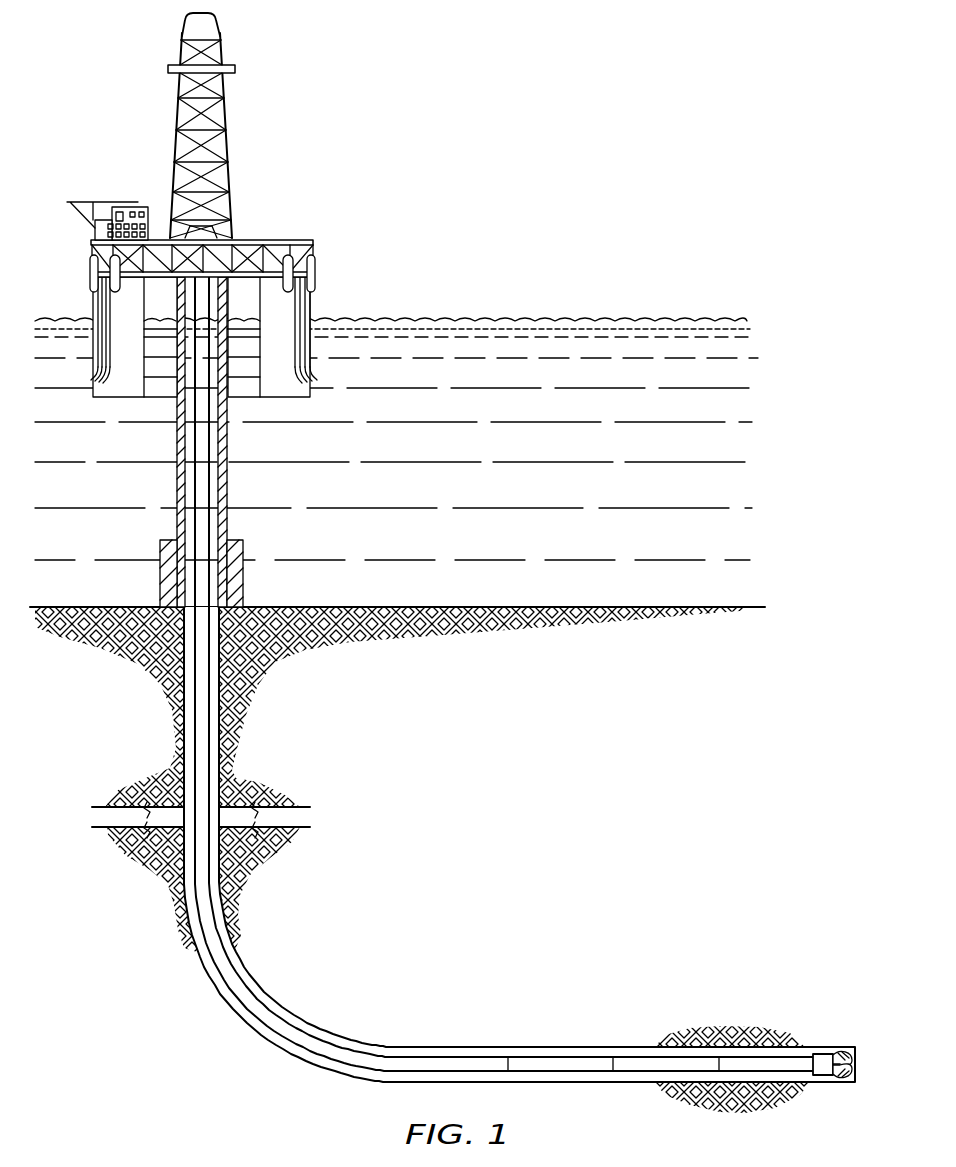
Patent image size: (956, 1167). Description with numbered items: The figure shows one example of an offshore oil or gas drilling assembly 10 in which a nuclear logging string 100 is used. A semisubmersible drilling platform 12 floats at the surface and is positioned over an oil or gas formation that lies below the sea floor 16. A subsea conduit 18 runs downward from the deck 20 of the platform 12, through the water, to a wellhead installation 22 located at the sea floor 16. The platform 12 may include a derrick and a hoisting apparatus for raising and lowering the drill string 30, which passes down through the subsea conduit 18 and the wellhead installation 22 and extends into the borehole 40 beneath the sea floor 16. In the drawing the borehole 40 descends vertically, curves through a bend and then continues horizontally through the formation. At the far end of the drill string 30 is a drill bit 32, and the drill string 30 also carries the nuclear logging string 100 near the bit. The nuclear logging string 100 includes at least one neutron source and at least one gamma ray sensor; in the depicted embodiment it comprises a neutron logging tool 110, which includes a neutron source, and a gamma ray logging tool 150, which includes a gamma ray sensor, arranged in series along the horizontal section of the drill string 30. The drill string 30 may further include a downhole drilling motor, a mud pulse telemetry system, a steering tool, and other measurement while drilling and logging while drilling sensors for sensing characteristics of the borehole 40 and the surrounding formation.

The offshore oil or gas drilling assembly 10 is at (316, 122).
The semisubmersible drilling platform 12 is at (298, 239).
The sea floor 16 is at (452, 607).
The subsea conduit 18 is at (228, 485).
The deck 20 is at (314, 274).
The wellhead installation 22 is at (244, 531).
The drill string 30 is at (200, 413).
The drill bit 32 is at (824, 1054).
The borehole 40 is at (186, 713).
The nuclear logging string 100 is at (680, 1044).
The neutron logging tool 110 is at (555, 1053).
The gamma ray logging tool 150 is at (646, 1069).